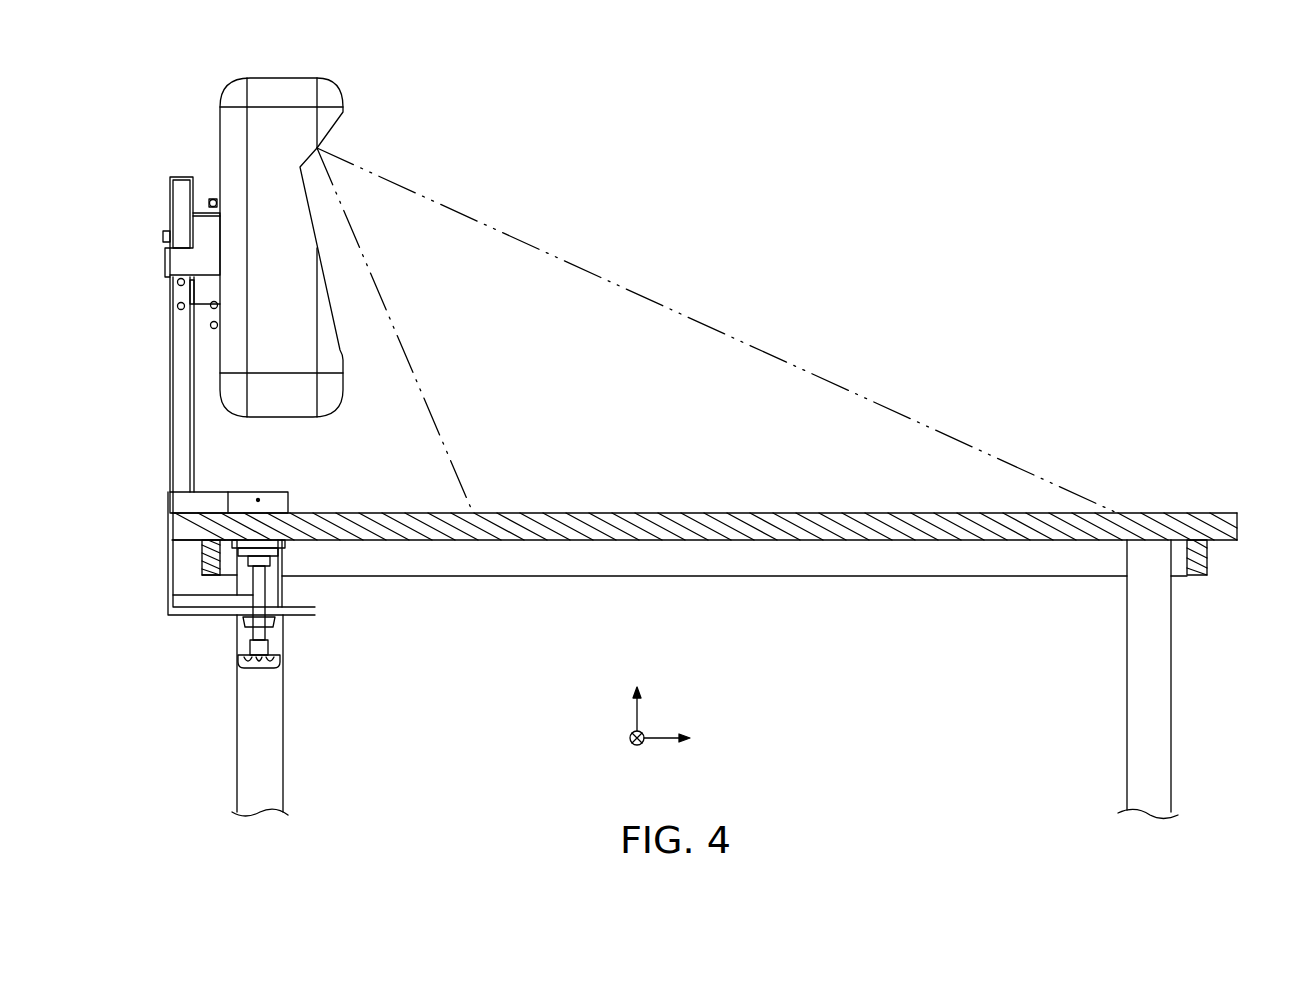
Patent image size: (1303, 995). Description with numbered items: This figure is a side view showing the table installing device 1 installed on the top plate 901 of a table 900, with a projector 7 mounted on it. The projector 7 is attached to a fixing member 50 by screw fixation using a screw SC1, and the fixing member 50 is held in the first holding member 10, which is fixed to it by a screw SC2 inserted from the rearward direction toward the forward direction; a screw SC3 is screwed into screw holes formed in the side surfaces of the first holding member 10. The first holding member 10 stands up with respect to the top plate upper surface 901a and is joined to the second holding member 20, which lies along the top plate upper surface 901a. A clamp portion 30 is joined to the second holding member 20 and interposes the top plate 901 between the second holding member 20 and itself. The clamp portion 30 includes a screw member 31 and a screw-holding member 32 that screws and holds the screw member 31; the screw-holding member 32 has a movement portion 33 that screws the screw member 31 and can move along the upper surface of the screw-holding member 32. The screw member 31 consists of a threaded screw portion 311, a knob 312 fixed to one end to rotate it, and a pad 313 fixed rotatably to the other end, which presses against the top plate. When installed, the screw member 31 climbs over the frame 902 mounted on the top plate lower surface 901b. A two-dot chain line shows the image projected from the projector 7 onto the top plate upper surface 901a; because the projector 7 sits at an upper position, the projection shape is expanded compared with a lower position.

The table installing device 1 is at (120, 152).
The projector 7 is at (343, 86).
The screw SC1 is at (207, 200).
The screw SC2 is at (163, 236).
The screw SC3 is at (170, 283).
The fixing member 50 is at (182, 266).
The first holding member 10 is at (170, 372).
The second holding member 20 is at (215, 492).
The clamp portion 30 is at (155, 598).
The screw member 31 is at (398, 583).
The screw portion 311 is at (265, 578).
The knob 312 is at (280, 658).
The pad 313 is at (283, 548).
The screw-holding member 32 is at (170, 574).
The movement portion 33 is at (242, 624).
The table 900 is at (1190, 468).
The top plate 901 is at (1137, 512).
The top plate upper surface 901a is at (965, 512).
The top plate lower surface 901b is at (825, 543).
The frame 902 is at (203, 557).